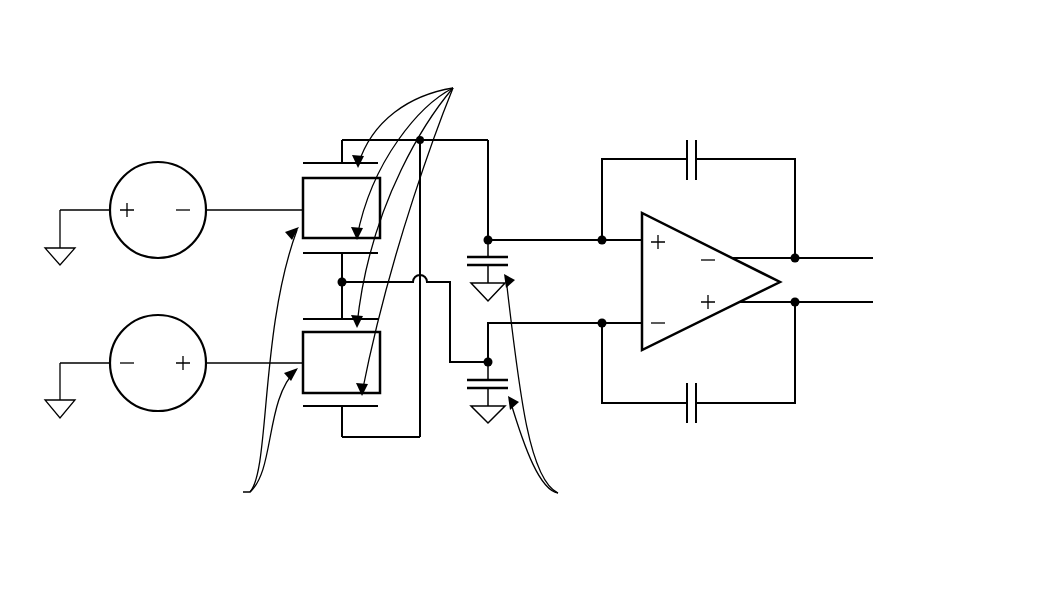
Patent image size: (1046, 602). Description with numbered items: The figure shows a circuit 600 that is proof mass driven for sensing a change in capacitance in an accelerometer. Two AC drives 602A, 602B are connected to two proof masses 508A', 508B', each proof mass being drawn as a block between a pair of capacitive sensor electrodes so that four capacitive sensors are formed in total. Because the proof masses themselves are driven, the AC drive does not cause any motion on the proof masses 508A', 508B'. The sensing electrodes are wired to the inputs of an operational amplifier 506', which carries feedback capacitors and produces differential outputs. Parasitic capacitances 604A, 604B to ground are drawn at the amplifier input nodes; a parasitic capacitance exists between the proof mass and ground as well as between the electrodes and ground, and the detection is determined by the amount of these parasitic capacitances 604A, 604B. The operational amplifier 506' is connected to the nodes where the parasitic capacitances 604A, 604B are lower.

The circuit 600 is at (740, 82).
The operational amplifier 506' is at (737, 273).
The proof mass 508A' is at (307, 192).
The proof mass 508B' is at (357, 378).
The AC drive 602A is at (174, 233).
The AC drive 602B is at (160, 400).
The parasitic capacitance 604A is at (475, 250).
The parasitic capacitance 604B is at (473, 395).